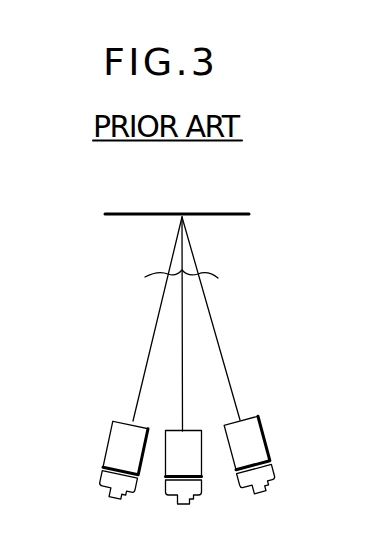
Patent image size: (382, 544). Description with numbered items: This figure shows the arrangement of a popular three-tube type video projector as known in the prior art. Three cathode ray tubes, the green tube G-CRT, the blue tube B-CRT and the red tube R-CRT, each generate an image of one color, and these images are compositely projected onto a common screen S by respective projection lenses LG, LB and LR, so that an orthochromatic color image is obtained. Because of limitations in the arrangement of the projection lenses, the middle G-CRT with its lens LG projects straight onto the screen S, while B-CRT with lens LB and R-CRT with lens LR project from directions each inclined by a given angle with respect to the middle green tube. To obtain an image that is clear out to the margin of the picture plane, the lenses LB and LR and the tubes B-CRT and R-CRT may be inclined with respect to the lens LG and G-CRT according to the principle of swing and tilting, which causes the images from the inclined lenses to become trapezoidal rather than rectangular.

The screen S is at (145, 213).
The projection lens for B-CRT LB is at (117, 438).
The projection lens for G-CRT LG is at (197, 452).
The projection lens for R-CRT LR is at (256, 445).
The blue cathode ray tube B-CRT is at (101, 483).
The green cathode ray tube G-CRT is at (178, 497).
The red cathode ray tube R-CRT is at (251, 489).